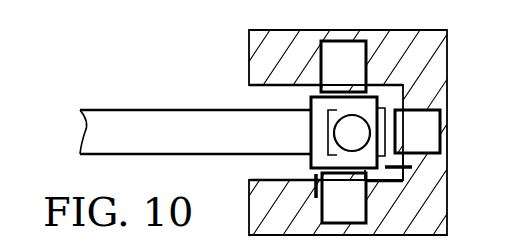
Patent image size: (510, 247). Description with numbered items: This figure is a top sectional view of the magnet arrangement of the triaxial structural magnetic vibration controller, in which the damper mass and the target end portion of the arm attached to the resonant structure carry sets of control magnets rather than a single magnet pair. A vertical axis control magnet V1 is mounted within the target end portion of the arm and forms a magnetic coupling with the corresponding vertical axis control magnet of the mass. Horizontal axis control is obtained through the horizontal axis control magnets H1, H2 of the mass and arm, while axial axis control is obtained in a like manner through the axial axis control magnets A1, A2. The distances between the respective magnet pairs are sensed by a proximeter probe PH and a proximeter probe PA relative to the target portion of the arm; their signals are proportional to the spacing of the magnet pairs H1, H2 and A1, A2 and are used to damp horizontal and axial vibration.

The horizontal axis control magnet H1 is at (343, 66).
The horizontal axis control magnet H2 is at (344, 198).
The axial axis control magnet A1 is at (402, 145).
The axial axis control magnet A2 is at (328, 142).
The vertical axis control magnet V1 is at (348, 132).
The proximeter probe PH is at (300, 196).
The proximeter probe PA is at (400, 190).